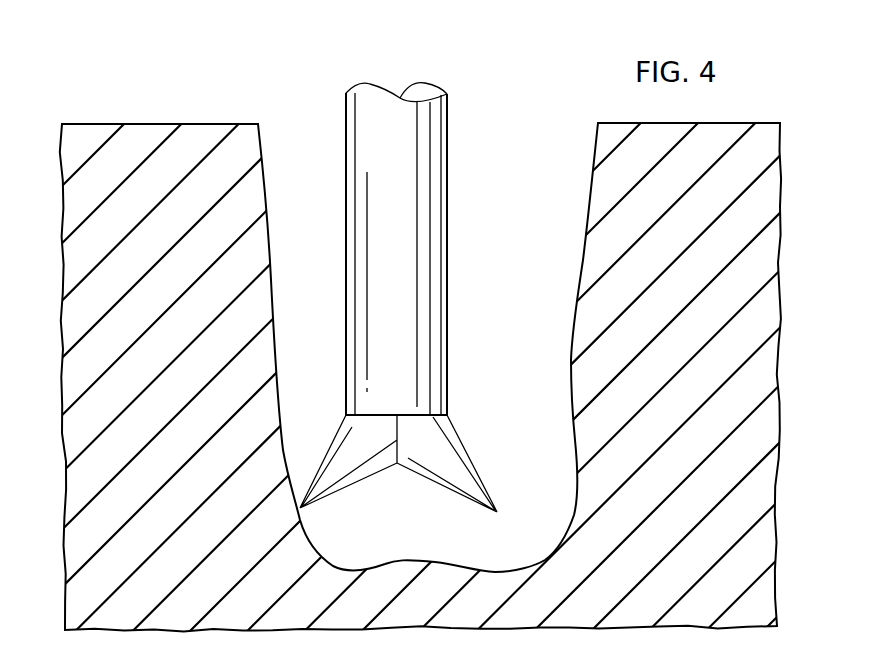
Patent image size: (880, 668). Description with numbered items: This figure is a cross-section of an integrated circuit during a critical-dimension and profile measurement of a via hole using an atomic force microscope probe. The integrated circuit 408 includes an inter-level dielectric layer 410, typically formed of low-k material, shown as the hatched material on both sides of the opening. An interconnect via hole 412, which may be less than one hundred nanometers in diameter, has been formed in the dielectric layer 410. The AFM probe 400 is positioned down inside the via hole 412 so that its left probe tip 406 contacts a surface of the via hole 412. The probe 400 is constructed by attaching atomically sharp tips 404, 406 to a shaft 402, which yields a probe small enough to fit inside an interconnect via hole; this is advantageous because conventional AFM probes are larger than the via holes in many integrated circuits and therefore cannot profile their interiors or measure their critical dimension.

The AFM probe 400 is at (385, 298).
The shaft 402 is at (450, 136).
The atomically sharp tip 404 is at (445, 490).
The left probe tip 406 is at (350, 490).
The integrated circuit 408 is at (168, 74).
The inter-level dielectric layer 410 is at (62, 324).
The interconnect via hole 412 is at (547, 126).